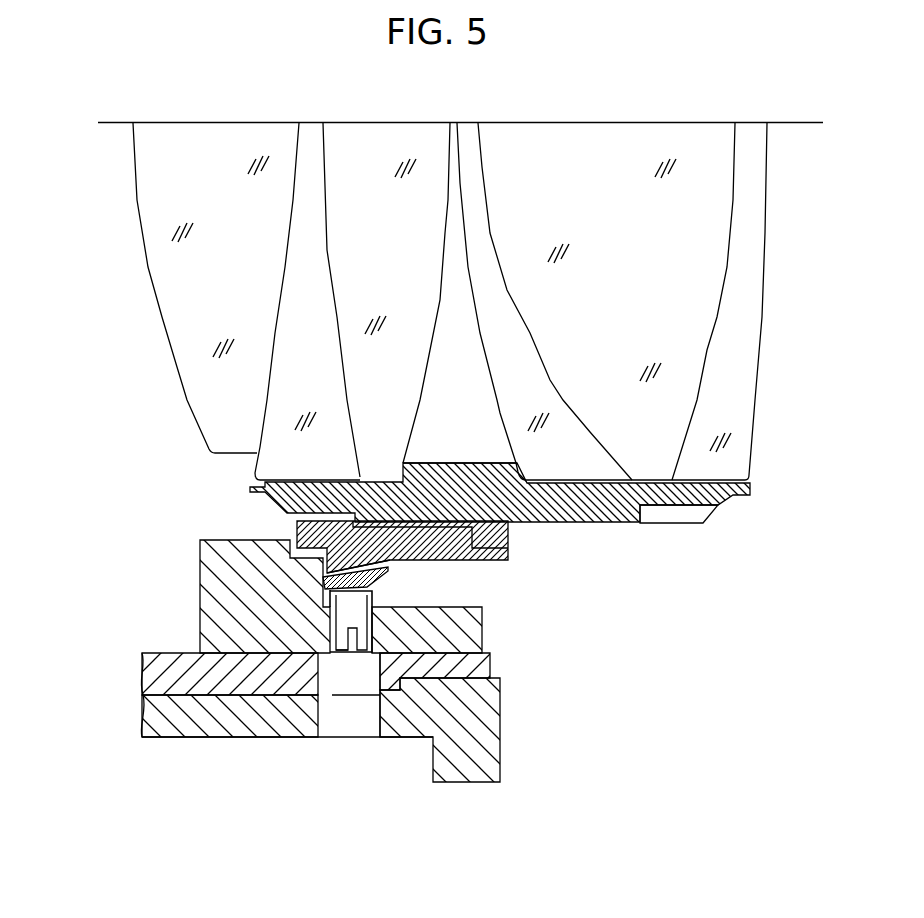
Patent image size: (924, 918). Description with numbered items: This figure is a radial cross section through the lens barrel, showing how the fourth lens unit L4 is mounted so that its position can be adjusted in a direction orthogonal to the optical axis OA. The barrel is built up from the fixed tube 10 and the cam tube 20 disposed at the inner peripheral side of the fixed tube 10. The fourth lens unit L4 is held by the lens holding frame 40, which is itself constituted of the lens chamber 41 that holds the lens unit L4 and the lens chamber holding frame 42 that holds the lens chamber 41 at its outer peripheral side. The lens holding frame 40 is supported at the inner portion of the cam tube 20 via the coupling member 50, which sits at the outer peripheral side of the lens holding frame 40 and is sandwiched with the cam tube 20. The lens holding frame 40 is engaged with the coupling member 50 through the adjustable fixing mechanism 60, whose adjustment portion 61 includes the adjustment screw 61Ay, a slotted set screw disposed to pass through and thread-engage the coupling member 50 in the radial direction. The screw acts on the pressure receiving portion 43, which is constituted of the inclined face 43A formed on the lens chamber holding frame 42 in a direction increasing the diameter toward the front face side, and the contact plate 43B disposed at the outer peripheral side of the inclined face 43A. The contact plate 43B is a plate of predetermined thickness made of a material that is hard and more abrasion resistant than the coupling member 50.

The fixed tube 10 is at (394, 740).
The cam tube 20 is at (490, 667).
The lens holding frame 40 is at (500, 537).
The lens chamber 41 is at (606, 522).
The lens chamber holding frame 42 is at (497, 562).
The pressure receiving portion 43 is at (417, 583).
The inclined face 43A is at (388, 570).
The contact plate 43B is at (333, 591).
The coupling member 50 is at (200, 605).
The adjustable fixing mechanism 60 is at (380, 724).
The adjustment portion 61 is at (360, 662).
The adjustment screw 61Ay is at (338, 657).
The fourth lens unit L4 is at (178, 373).
The optical axis OA is at (790, 123).